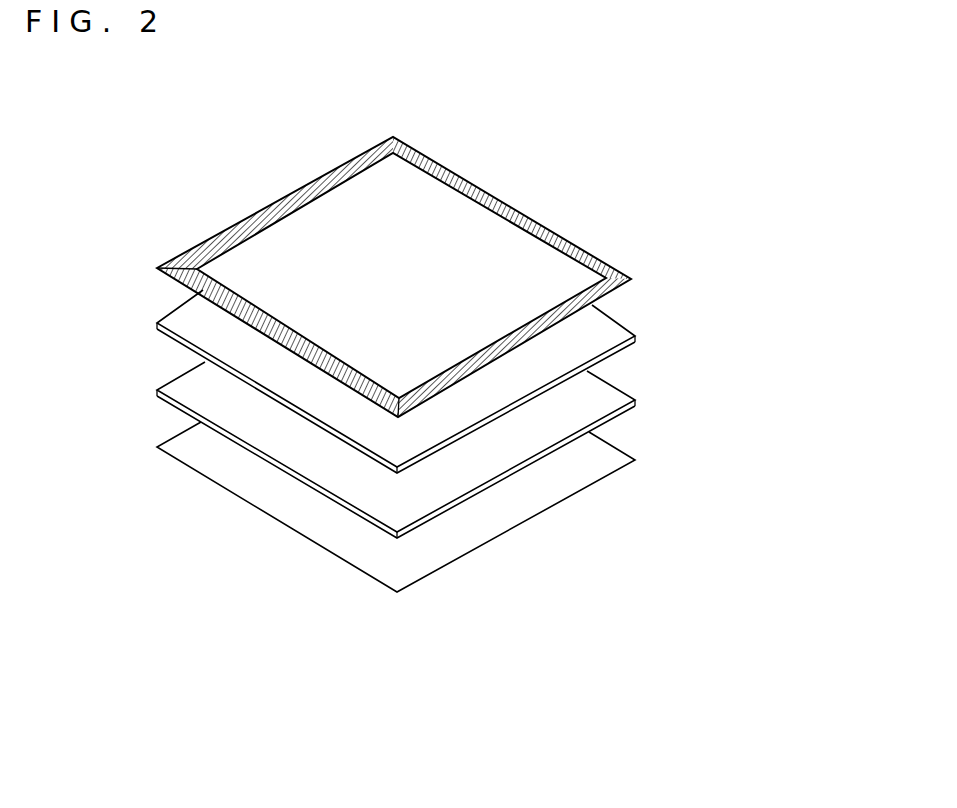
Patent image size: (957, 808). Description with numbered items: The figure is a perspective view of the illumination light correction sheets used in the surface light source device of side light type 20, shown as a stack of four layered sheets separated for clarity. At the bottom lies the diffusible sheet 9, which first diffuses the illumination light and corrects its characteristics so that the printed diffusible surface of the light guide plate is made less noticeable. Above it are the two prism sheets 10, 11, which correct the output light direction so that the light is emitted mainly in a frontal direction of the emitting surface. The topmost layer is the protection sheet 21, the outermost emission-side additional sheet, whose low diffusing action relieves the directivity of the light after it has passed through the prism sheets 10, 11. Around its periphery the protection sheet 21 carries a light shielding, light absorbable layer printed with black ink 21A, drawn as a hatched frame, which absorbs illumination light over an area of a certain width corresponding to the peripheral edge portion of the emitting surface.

The surface light source device of side light type 20 is at (213, 598).
The protection sheet 21 is at (631, 280).
The black ink 21A is at (593, 253).
The prism sheet 11 is at (610, 333).
The prism sheet 10 is at (608, 400).
The diffusible sheet 9 is at (608, 455).